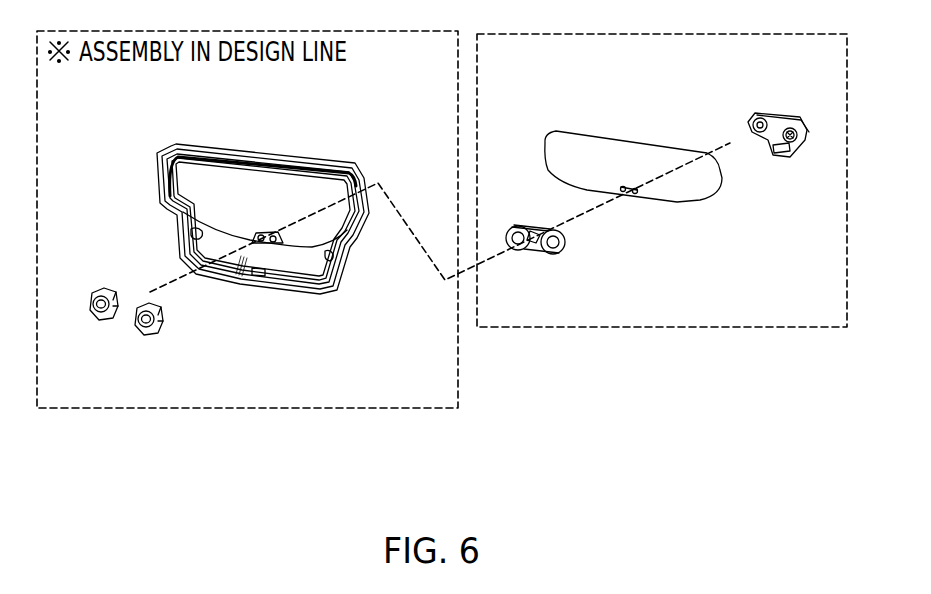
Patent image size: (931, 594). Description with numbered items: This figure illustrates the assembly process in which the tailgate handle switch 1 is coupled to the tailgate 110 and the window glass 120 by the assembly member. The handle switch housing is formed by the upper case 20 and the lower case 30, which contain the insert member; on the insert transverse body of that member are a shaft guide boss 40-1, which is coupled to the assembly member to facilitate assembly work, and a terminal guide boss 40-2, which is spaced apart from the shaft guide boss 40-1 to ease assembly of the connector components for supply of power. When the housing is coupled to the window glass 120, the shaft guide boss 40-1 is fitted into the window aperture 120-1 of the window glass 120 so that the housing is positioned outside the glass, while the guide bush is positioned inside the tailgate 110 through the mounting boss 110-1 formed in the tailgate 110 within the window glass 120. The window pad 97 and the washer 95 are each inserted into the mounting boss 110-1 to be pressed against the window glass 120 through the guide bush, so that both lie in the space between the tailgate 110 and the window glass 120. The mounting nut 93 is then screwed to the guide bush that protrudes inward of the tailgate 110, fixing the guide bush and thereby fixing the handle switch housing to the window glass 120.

The tailgate handle switch 1 is at (744, 94).
The upper case 20 is at (808, 120).
The lower case 30 is at (778, 124).
The shaft guide boss 40-1 is at (758, 134).
The terminal guide boss 40-2 is at (797, 145).
The mounting nut 93 is at (143, 333).
The washer 95 is at (551, 254).
The window pad 97 is at (535, 236).
The tailgate 110 is at (224, 163).
The mounting boss 110-1 is at (262, 232).
The window glass 120 is at (607, 153).
The window aperture 120-1 is at (635, 195).